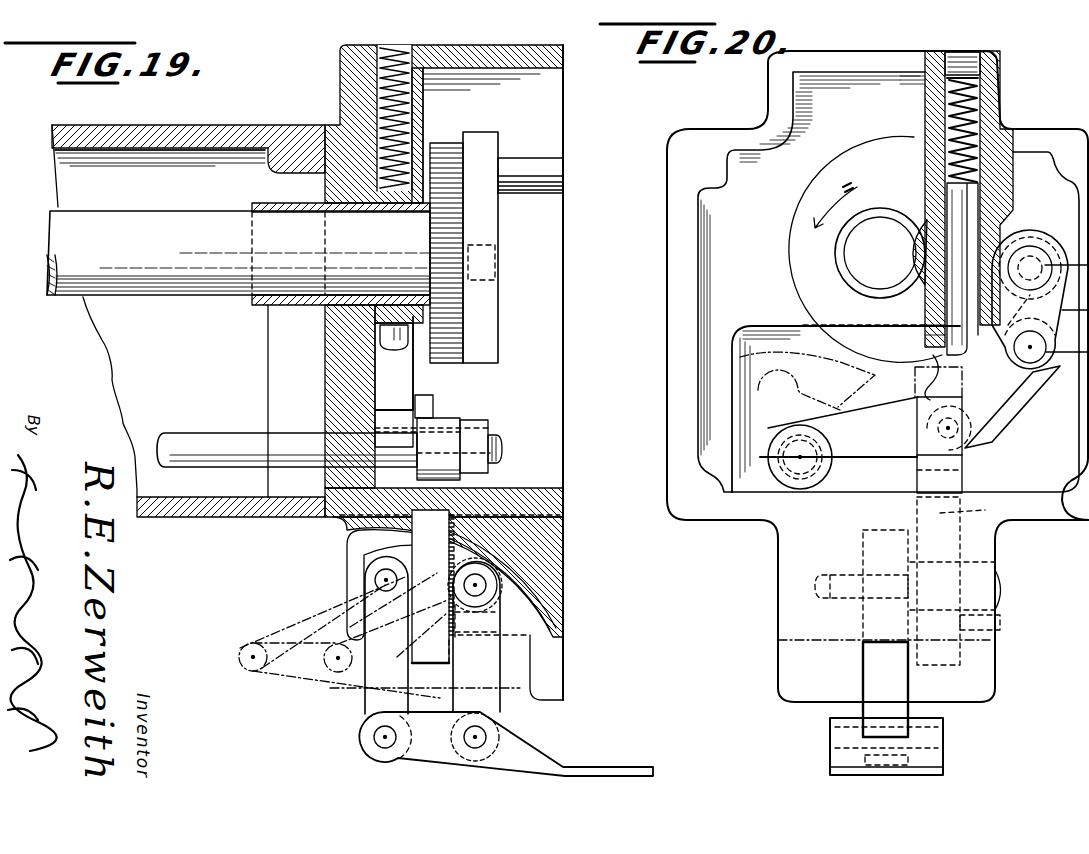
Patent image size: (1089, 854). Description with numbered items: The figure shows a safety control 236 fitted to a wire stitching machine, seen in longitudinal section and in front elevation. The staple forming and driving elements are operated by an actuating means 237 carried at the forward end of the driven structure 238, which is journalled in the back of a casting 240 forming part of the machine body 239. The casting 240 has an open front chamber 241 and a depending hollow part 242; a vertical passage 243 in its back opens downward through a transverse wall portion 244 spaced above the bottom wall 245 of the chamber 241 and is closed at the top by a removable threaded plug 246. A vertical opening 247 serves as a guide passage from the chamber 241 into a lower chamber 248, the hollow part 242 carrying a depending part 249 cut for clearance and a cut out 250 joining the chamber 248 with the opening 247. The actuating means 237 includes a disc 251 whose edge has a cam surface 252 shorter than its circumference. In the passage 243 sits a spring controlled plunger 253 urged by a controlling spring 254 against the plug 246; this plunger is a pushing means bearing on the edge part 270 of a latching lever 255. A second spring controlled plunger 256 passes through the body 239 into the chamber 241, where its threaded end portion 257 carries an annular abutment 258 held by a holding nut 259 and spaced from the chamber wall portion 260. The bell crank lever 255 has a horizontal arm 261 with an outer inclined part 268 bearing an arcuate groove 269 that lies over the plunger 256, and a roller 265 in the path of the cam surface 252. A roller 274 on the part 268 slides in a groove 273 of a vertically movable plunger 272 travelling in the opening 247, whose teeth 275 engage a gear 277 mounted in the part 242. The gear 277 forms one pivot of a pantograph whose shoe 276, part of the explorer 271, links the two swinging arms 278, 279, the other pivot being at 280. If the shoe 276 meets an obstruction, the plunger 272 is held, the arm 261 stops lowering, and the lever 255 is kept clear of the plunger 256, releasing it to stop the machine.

In FIG. 20, the safety control 236 is at (1021, 403).
In FIG. 19, the actuating means 237 is at (500, 320).
In FIG. 19, the driven structure 238 is at (152, 287).
In FIG. 19, the body of the wire stitching machine 239 is at (176, 148).
In FIG. 19, the casting 240 is at (328, 338).
In FIG. 19, the open front chamber 241 is at (545, 396).
In FIG. 19, the depending hollow part 242 is at (563, 566).
In FIG. 20, the depending hollow part 242 is at (985, 592).
In FIG. 19, the vertically disposed passage 243 is at (428, 108).
In FIG. 20, the vertically disposed passage 243 is at (983, 94).
In FIG. 19, the transversely disposed wall portion 244 is at (325, 316).
In FIG. 20, the transversely disposed wall portion 244 is at (780, 317).
In FIG. 19, the bottom wall of chamber 245 is at (545, 488).
In FIG. 20, the bottom wall of chamber 245 is at (915, 530).
In FIG. 20, the removable threaded plug 246 is at (1000, 60).
In FIG. 19, the vertically disposed opening 247 is at (492, 484).
In FIG. 20, the vertically disposed opening 247 is at (920, 506).
In FIG. 19, the chamber 248 is at (373, 543).
In FIG. 19, the depending part 249 is at (565, 677).
In FIG. 20, the depending part 249 is at (925, 678).
In FIG. 19, the cut out 250 is at (430, 547).
In FIG. 19, the disc 251 is at (480, 225).
In FIG. 20, the disc 251 is at (785, 247).
In FIG. 20, the cam surface 252 is at (910, 138).
In FIG. 20, the spring controlled plunger 253 is at (957, 235).
In FIG. 19, the controlling spring 254 is at (326, 93).
In FIG. 20, the controlling spring 254 is at (944, 107).
In FIG. 19, the latching lever 255 is at (385, 408).
In FIG. 20, the latching lever 255 is at (898, 447).
In FIG. 19, the spring controlled plunger 256 is at (173, 441).
In FIG. 20, the spring controlled plunger 256 is at (794, 465).
In FIG. 19, the threaded end portion 257 is at (499, 444).
In FIG. 19, the annular abutment 258 is at (440, 427).
In FIG. 19, the holding nut 259 is at (478, 424).
In FIG. 19, the wall portion of the chamber 260 is at (385, 376).
In FIG. 20, the arm 261 is at (984, 433).
In FIG. 20, the roller 265 is at (1025, 250).
In FIG. 19, the outer inclined part 268 is at (378, 425).
In FIG. 20, the outer inclined part 268 is at (848, 458).
In FIG. 20, the arcuate groove 269 is at (828, 438).
In FIG. 20, the edge part 270 is at (963, 377).
In FIG. 19, the explorer 271 is at (570, 742).
In FIG. 20, the vertically movable plunger 272 is at (985, 510).
In FIG. 19, the groove 273 is at (425, 403).
In FIG. 20, the roller 274 is at (995, 428).
In FIG. 19, the teeth 275 is at (357, 563).
In FIG. 19, the shoe 276 is at (513, 757).
In FIG. 20, the shoe 276 is at (920, 765).
In FIG. 19, the gear 277 is at (500, 605).
In FIG. 20, the gear 277 is at (1000, 622).
In FIG. 19, the swinging arm 278 is at (410, 640).
In FIG. 19, the swinging arm 279 is at (425, 599).
In FIG. 20, the swinging arm 279 is at (893, 680).
In FIG. 19, the pivot 280 is at (386, 581).